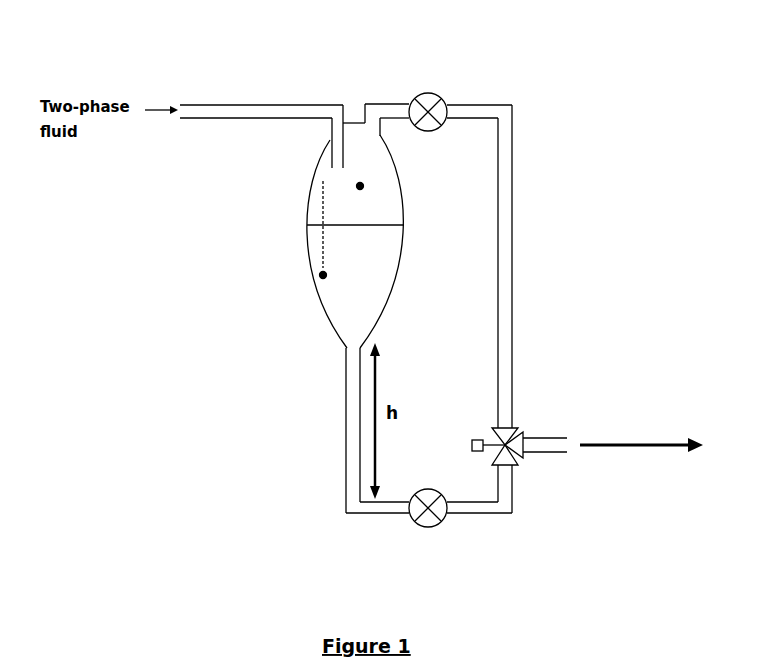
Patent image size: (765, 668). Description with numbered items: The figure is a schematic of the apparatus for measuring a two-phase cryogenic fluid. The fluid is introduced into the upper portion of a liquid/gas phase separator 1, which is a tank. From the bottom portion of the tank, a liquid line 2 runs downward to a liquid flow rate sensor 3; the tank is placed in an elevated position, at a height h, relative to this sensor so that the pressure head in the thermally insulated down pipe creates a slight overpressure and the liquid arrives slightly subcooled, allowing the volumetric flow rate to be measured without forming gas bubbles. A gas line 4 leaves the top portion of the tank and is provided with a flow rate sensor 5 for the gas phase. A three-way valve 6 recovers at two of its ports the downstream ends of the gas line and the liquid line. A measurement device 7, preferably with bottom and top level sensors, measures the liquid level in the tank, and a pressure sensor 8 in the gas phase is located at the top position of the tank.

The liquid/gas phase separator 1 is at (290, 260).
The liquid line 2 is at (338, 425).
The liquid flow rate sensor 3 is at (448, 528).
The gas line 4 is at (475, 97).
The flow rate sensor 5 is at (428, 82).
The three-way valve 6 is at (527, 405).
The measurement device 7 is at (323, 181).
The pressure sensor 8 is at (360, 186).